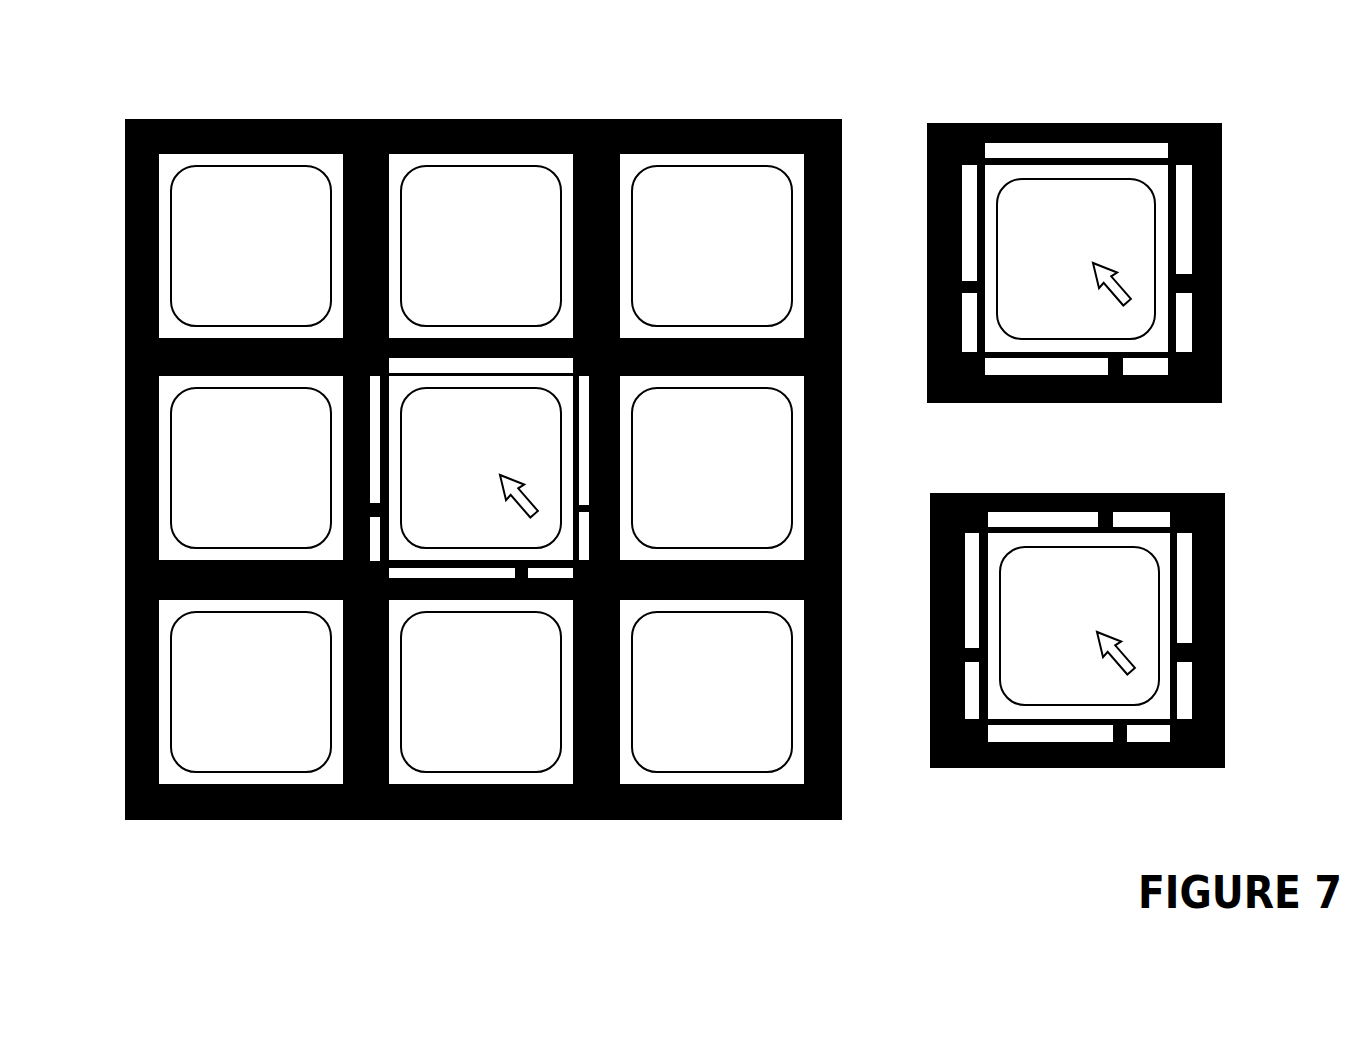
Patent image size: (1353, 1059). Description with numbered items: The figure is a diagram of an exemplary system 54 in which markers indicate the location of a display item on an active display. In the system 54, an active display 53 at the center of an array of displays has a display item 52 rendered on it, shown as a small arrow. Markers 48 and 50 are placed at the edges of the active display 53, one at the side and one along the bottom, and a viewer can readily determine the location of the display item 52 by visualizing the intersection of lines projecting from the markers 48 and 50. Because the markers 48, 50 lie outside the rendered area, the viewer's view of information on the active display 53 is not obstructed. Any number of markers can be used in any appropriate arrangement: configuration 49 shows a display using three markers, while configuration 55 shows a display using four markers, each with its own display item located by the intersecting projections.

The exemplary system 54 is at (177, 59).
The marker 48 is at (346, 498).
The configuration 49 is at (913, 96).
The marker 50 is at (518, 580).
The display item 52 is at (517, 492).
The active display 53 is at (434, 411).
The configuration 55 is at (916, 796).